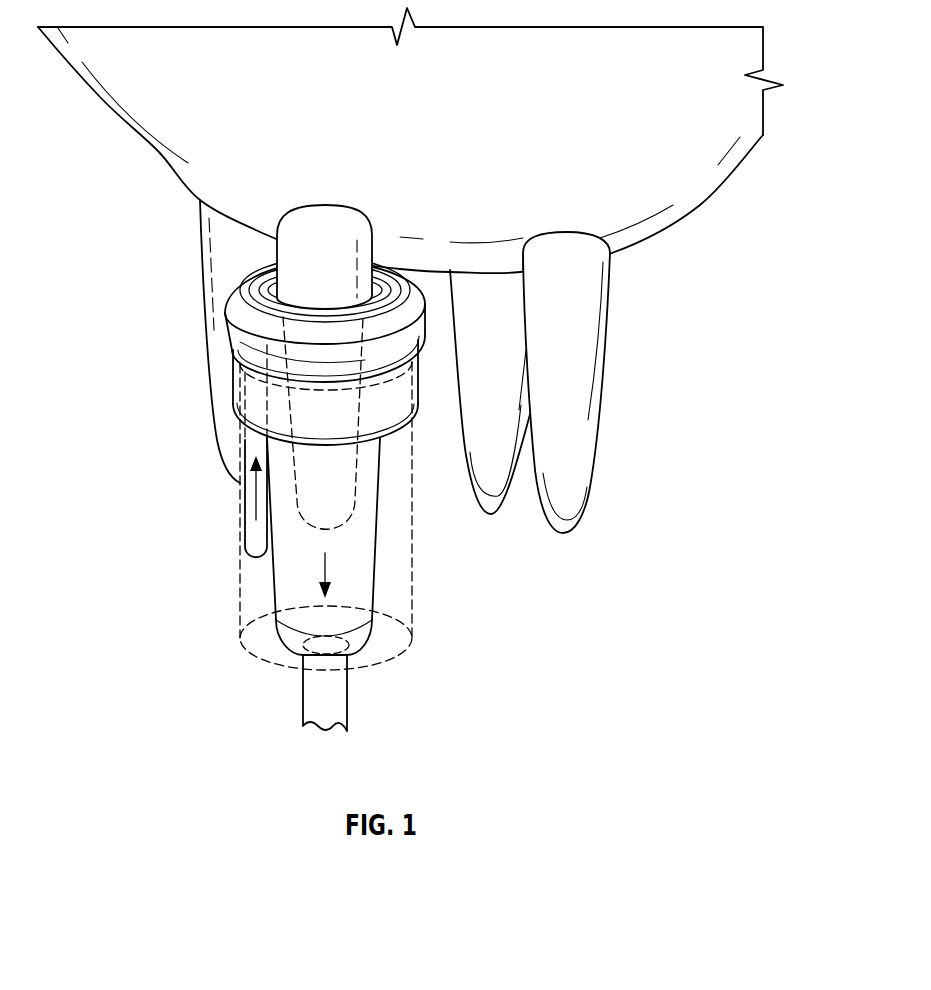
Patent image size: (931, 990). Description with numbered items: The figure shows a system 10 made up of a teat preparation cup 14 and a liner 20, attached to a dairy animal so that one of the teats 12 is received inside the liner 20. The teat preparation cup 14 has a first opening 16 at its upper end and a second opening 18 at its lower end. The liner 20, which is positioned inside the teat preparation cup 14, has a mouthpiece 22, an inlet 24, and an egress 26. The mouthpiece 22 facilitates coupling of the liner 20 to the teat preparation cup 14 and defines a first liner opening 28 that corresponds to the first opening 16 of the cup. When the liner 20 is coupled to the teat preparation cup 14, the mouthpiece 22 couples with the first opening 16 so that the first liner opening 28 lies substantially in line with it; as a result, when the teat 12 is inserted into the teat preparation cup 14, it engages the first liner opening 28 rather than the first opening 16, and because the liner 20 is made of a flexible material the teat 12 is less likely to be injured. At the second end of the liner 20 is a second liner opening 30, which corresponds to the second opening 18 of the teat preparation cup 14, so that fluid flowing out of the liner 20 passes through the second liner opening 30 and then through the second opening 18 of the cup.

The system 10 is at (110, 752).
The teat 12 is at (211, 253).
The teat preparation cup 14 is at (238, 562).
The first opening 16 is at (277, 380).
The second opening 18 is at (275, 662).
The liner 20 is at (273, 593).
The mouthpiece 22 is at (407, 291).
The inlet 24 is at (250, 525).
The egress 26 is at (357, 577).
The first liner opening 28 is at (348, 304).
The second liner opening 30 is at (362, 625).